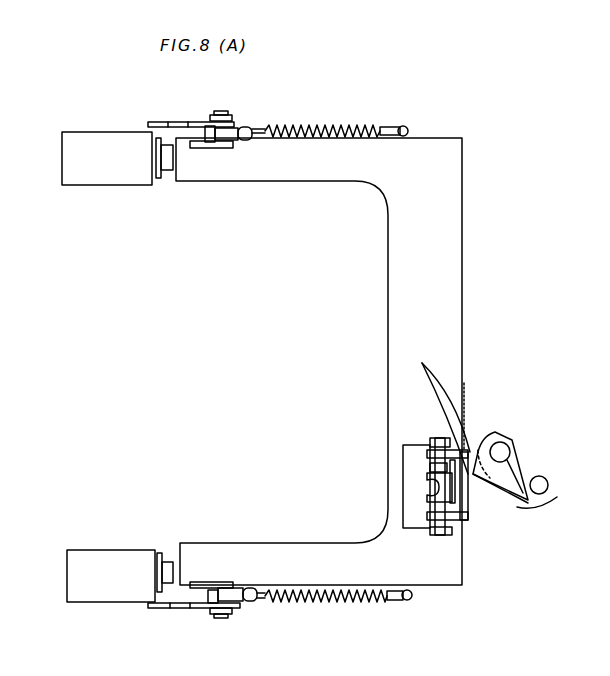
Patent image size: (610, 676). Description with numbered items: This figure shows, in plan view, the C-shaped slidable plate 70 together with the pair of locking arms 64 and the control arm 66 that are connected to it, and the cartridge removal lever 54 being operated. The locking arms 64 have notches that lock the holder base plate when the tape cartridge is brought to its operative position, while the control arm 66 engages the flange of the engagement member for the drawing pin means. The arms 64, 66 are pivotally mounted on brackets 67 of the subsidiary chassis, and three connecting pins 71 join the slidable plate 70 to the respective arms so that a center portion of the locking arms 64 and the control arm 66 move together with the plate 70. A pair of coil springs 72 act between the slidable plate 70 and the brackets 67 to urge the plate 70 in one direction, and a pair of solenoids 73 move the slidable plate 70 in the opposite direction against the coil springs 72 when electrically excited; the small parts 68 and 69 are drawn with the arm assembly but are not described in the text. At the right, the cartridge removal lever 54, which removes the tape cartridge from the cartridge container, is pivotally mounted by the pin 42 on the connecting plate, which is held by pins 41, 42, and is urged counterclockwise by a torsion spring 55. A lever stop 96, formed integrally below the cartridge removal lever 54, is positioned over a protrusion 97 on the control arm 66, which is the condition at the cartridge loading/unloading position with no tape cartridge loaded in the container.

The pin 41 is at (540, 485).
The pin 42 is at (503, 448).
The cartridge removal lever 54 is at (442, 390).
The torsion spring 55 is at (507, 492).
The locking arm 64 is at (163, 120).
The control arm 66 is at (430, 487).
The bracket 67 is at (233, 136).
The nut 68 is at (220, 113).
The spacer 69 is at (430, 467).
The slidable plate 70 is at (455, 202).
The connecting pin 71 is at (210, 136).
The coil spring 72 is at (290, 128).
The solenoid 73 is at (93, 142).
The lever stop 96 is at (487, 428).
The protrusion 97 is at (478, 483).